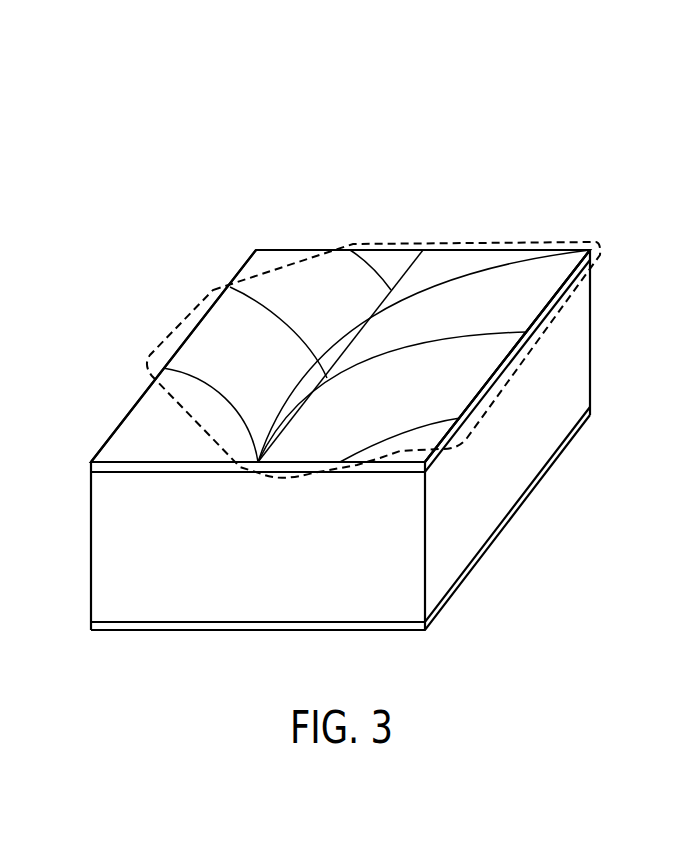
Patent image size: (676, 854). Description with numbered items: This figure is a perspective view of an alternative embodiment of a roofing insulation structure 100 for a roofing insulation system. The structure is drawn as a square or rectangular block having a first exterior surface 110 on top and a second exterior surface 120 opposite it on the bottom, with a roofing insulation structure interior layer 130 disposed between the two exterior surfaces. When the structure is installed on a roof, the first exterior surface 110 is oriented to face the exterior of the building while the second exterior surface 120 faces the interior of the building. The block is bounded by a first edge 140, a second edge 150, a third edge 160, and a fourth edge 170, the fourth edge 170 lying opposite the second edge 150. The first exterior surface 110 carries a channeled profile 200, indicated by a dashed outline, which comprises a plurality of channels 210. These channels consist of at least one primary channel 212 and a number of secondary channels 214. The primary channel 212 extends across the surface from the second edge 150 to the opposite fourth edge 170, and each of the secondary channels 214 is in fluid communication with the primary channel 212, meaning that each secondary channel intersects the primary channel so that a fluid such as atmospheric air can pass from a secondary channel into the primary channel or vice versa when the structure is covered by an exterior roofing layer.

The roofing insulation structure 100 is at (570, 93).
The first exterior surface 110 is at (293, 290).
The second exterior surface 120 is at (433, 617).
The roofing insulation structure interior layer 130 is at (576, 363).
The first edge 140 is at (503, 369).
The second edge 150 is at (310, 250).
The third edge 160 is at (100, 446).
The fourth edge 170 is at (158, 464).
The channeled profile 200 is at (513, 240).
The channels 210 is at (376, 330).
The primary channel 212 is at (408, 268).
The secondary channel 214 is at (207, 383).